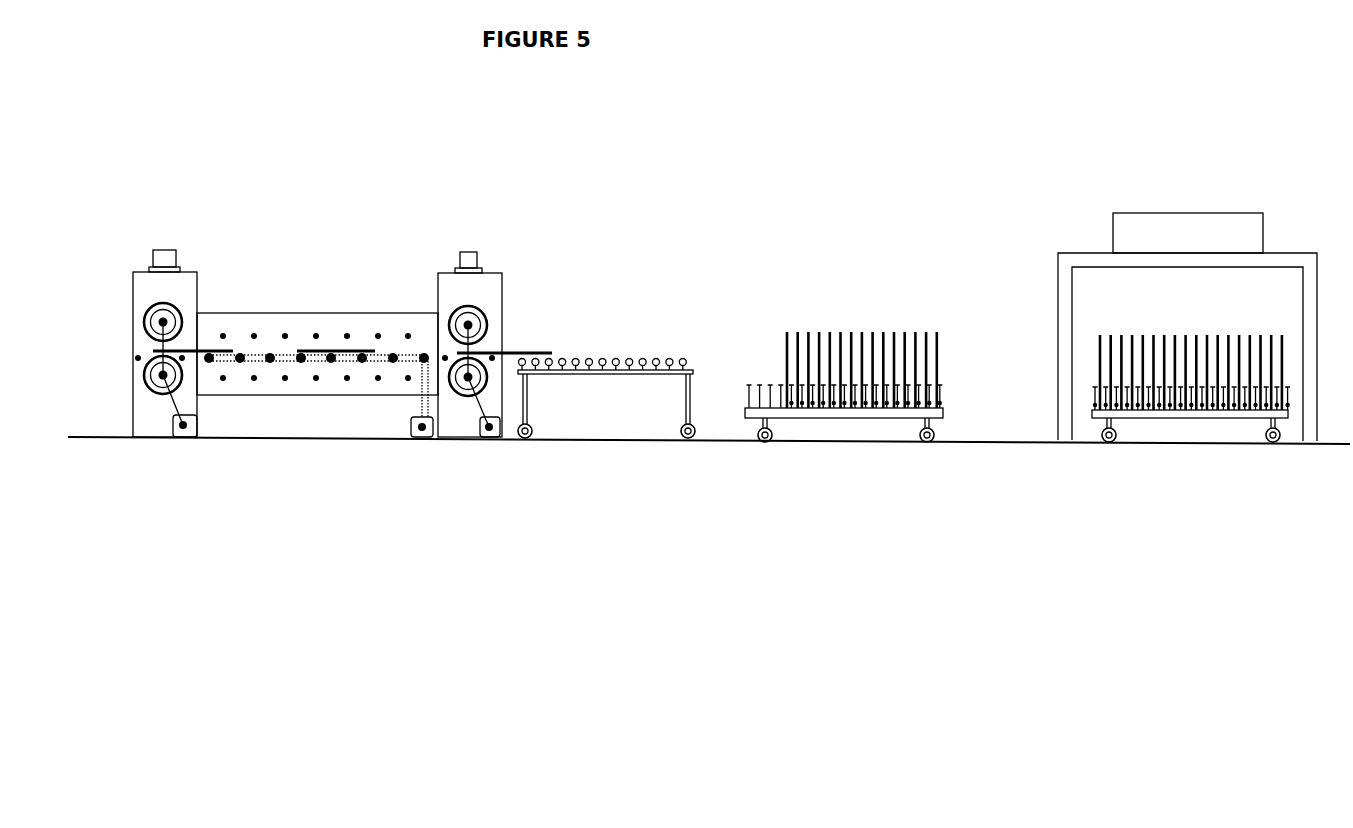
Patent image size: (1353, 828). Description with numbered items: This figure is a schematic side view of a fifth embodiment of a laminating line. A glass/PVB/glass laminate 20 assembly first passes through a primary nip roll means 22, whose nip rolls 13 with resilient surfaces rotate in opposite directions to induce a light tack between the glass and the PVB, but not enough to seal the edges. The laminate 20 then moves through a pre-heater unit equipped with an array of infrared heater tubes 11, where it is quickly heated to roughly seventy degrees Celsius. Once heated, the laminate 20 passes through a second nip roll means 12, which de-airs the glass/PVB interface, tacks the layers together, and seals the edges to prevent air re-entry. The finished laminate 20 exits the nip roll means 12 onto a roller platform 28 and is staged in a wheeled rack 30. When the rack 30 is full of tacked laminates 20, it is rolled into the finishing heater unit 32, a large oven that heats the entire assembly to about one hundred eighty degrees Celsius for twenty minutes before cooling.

The infrared heater tubes 11 is at (415, 328).
The nip roll means 12 is at (520, 303).
The nip rolls 13 is at (178, 305).
The laminate assembly 20 is at (327, 357).
The primary nip roll means 22 is at (138, 263).
The roller platform 28 is at (640, 343).
The rack 30 is at (817, 427).
The finishing heater unit 32 is at (1098, 227).